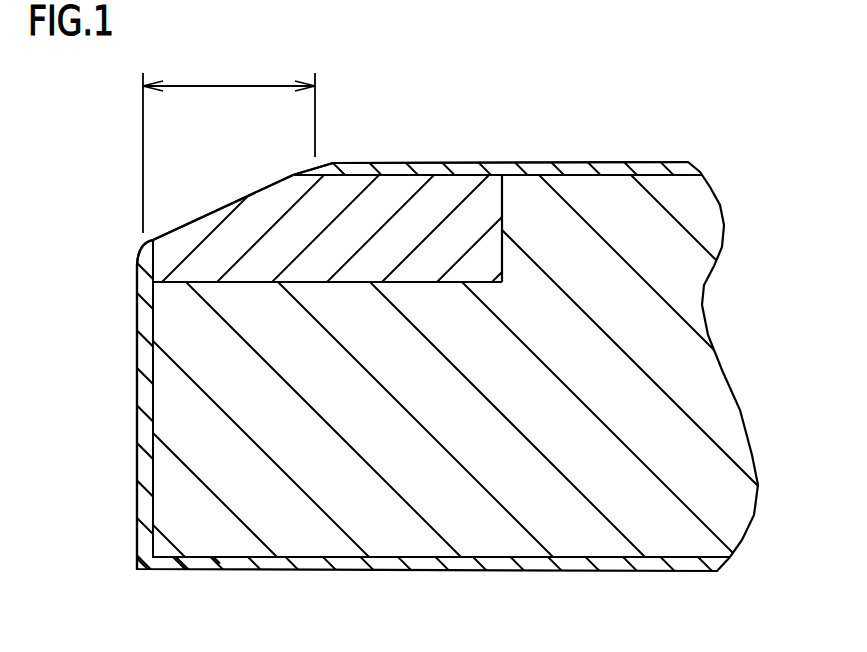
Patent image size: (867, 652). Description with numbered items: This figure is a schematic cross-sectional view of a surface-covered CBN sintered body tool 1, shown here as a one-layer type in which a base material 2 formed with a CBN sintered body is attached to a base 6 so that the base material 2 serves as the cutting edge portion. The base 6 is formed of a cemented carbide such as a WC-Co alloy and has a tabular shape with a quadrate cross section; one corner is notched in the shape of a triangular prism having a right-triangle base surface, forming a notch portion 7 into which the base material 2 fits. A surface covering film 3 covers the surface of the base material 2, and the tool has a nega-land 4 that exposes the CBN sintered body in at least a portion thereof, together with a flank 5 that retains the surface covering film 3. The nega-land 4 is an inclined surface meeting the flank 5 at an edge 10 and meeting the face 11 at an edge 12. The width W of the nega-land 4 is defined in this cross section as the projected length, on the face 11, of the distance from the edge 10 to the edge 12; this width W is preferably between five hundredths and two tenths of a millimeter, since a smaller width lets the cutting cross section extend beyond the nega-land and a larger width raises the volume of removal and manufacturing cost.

The surface-covered CBN sintered body tool 1 is at (748, 225).
The base material 2 is at (195, 263).
The surface covering film 3 is at (143, 473).
The nega-land 4 is at (210, 223).
The flank 5 is at (137, 395).
The base 6 is at (500, 530).
The notch portion 7 is at (244, 288).
The edge 10 is at (143, 237).
The face 11 is at (512, 162).
The edge 12 is at (313, 166).
The width of nega-land W is at (229, 145).